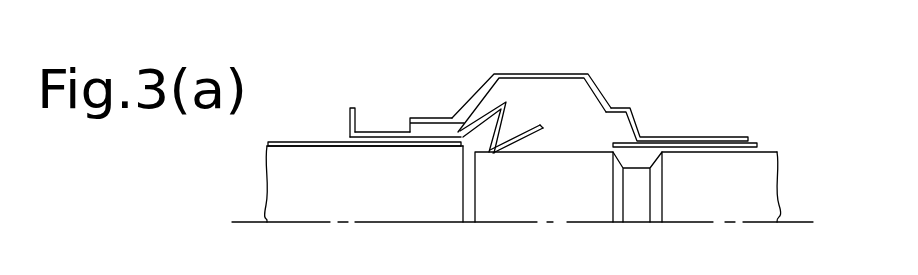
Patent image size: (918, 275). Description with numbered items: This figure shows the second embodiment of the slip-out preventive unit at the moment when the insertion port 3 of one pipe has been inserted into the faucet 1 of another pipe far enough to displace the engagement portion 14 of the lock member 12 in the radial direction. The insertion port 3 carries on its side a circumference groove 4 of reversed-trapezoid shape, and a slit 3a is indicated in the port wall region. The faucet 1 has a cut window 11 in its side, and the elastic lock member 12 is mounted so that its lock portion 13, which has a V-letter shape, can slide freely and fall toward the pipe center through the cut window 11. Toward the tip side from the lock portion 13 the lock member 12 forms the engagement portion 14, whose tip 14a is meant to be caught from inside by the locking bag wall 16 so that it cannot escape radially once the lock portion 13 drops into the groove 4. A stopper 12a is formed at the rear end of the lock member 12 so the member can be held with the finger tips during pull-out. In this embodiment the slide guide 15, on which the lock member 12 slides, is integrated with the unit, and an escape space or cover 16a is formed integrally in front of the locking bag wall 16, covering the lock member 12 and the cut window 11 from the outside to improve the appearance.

The faucet 1 is at (722, 147).
The insertion port 3 is at (495, 183).
The slit of substrate 3a is at (468, 197).
The circumference groove 4 is at (640, 167).
The cut window 11 is at (577, 140).
The lock member 12 is at (377, 133).
The stopper 12a is at (352, 108).
The lock portion 13 is at (490, 140).
The engagement portion 14 is at (532, 140).
The tip of engagement portion 14a is at (540, 127).
The slide guide 15 is at (430, 118).
The locking bag wall 16 is at (623, 107).
The escape space (cover) 16a is at (545, 77).